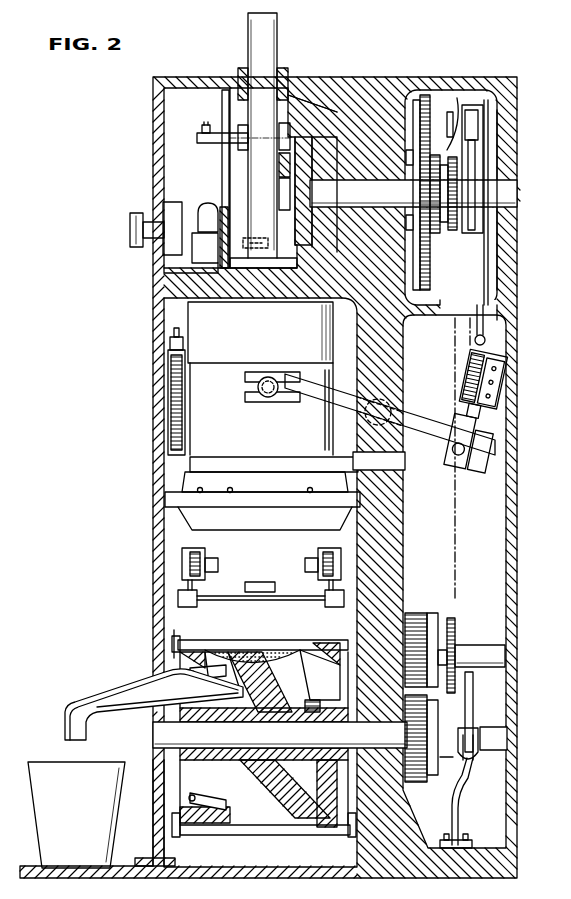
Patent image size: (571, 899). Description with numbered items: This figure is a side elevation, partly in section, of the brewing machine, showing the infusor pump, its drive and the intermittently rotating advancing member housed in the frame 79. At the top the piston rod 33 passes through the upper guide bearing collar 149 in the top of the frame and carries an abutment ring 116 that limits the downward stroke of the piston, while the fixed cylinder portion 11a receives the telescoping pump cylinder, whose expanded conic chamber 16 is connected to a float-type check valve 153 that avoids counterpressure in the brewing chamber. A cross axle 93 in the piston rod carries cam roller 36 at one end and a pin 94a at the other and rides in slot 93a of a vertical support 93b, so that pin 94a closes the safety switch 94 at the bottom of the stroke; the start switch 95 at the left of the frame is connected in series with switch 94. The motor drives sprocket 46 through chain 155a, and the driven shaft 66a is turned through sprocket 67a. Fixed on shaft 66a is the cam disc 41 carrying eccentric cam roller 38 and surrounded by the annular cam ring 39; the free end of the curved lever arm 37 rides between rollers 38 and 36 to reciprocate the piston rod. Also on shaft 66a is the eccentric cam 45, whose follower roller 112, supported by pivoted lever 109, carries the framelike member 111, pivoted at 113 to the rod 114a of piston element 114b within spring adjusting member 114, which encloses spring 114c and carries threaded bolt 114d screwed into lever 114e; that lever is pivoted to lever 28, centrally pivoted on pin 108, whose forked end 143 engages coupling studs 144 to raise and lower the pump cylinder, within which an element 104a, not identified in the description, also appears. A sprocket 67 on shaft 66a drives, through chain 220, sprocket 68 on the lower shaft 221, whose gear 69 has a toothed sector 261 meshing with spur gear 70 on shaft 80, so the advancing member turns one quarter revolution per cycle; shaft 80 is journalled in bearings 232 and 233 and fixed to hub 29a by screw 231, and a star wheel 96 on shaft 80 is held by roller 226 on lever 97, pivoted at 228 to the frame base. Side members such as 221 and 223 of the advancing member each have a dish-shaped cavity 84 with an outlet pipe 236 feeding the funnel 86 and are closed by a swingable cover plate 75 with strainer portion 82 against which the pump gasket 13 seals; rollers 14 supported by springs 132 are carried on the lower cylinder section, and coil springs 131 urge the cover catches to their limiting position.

The piston rod 33 is at (279, 50).
The upper guide bearing collar 149 is at (290, 92).
The cam disc 41 is at (305, 138).
The annular cam ring 39 is at (323, 135).
The sprocket 46 is at (412, 92).
The chain 155a is at (427, 120).
The pivoted lever 109 is at (458, 118).
The follower cam roller 112 is at (480, 115).
The cam 45 is at (476, 160).
The driven shaft 66a is at (365, 201).
The sprocket 67a is at (430, 190).
The sprocket 67 is at (447, 162).
The framelike member 111 is at (490, 248).
The frame 79 is at (500, 275).
The cam roller 36 is at (290, 128).
The curved lever arm 37 is at (279, 165).
The eccentric cam roller 38 is at (279, 198).
The slot 93a is at (222, 118).
The pin 94a is at (202, 128).
The axle 93 is at (199, 141).
The start switch 95 is at (136, 212).
The safety switch 94 is at (199, 212).
The vertical support 93b is at (223, 208).
The abutment ring 116 is at (262, 238).
The fixed cylinder portion 11a is at (272, 339).
The coupling studs 144 is at (246, 385).
The fork 143 is at (246, 403).
The float-type check valve 153 is at (168, 425).
The conic chamber 16 is at (205, 482).
The coil spring 131 is at (262, 470).
The pin 108 is at (396, 404).
The lever 28 is at (438, 450).
The pivot 113 is at (486, 337).
The rod 114a is at (498, 358).
The spring 114c is at (498, 375).
The spring adjusting member 114 is at (500, 395).
The piston element 114b is at (500, 410).
The threaded bolt 114d is at (500, 432).
The lever 114e is at (502, 460).
The springs 132 is at (180, 568).
The stop plate 104a is at (260, 582).
The rollers 14 is at (178, 600).
The chain 220 is at (457, 598).
The gear 69 is at (410, 620).
The toothed sector 261 is at (418, 640).
The sprocket 68 is at (456, 632).
The lower shaft 221 is at (205, 648).
The swingable cover plate 75 is at (178, 640).
The strainer portion 82 is at (255, 655).
The projecting gasket 13 is at (283, 645).
The dish-shaped cavity 84 is at (315, 652).
The funnel 86 is at (94, 700).
The outlet pipe 236 is at (206, 678).
The screw 231 is at (330, 690).
The star wheel 96 is at (474, 690).
The roller 226 is at (480, 735).
The bearing 232 is at (158, 778).
The shaft 80 is at (289, 743).
The hub 29a is at (306, 762).
The bearing 233 is at (512, 748).
The spur gear 70 is at (410, 782).
The lever 97 is at (459, 808).
The side member 223 is at (205, 825).
The pivot 228 is at (468, 845).